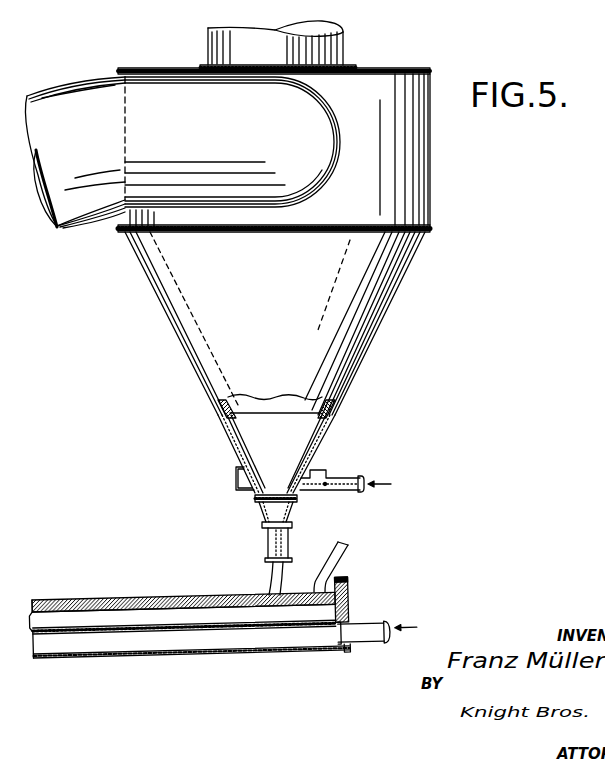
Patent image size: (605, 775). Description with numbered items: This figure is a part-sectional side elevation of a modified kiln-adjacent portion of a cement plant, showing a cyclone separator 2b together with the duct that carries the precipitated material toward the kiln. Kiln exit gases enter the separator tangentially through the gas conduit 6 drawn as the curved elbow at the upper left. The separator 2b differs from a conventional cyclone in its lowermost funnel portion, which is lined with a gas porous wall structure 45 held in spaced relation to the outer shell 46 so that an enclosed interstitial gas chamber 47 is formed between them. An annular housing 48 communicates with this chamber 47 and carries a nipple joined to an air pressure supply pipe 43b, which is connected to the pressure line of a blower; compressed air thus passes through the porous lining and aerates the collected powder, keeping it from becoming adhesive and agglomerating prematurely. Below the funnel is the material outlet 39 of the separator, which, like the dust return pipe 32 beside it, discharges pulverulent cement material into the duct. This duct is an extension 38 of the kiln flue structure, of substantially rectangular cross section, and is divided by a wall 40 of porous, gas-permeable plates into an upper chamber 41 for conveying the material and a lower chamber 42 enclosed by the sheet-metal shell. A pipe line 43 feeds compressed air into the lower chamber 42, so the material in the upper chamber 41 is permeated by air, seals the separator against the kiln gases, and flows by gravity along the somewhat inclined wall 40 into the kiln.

The gas conduit 6 is at (93, 214).
The separator 2b is at (397, 284).
The outer shell 46 is at (231, 443).
The interstitial gas chamber 47 is at (243, 452).
The gas porous wall structure 45 is at (300, 462).
The annular housing 48 is at (247, 491).
The air pressure supply pipe 43b is at (350, 492).
The material outlet 39 is at (270, 567).
The dust return pipe 32 is at (349, 559).
The extension of the flue structure 38 is at (119, 575).
The upper chamber 41 is at (165, 618).
The wall 40 is at (117, 634).
The lower chamber 42 is at (254, 648).
The pipe line 43 is at (368, 632).